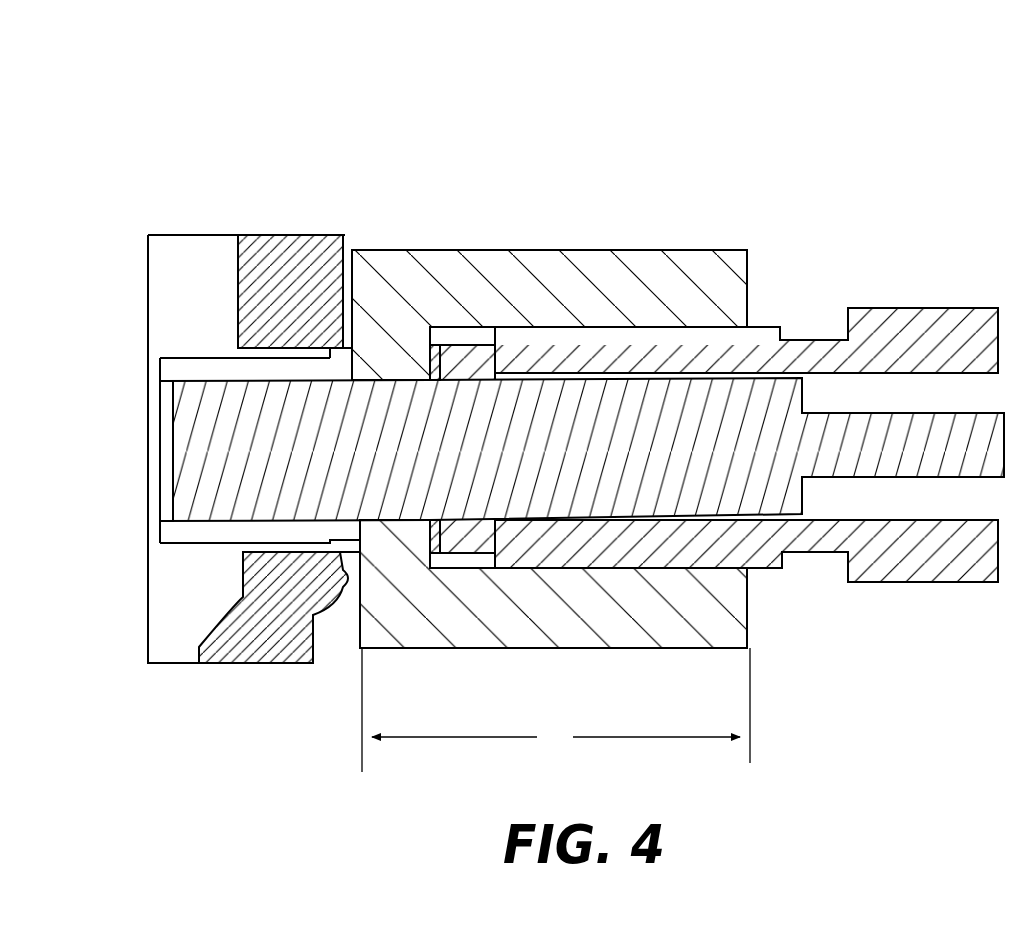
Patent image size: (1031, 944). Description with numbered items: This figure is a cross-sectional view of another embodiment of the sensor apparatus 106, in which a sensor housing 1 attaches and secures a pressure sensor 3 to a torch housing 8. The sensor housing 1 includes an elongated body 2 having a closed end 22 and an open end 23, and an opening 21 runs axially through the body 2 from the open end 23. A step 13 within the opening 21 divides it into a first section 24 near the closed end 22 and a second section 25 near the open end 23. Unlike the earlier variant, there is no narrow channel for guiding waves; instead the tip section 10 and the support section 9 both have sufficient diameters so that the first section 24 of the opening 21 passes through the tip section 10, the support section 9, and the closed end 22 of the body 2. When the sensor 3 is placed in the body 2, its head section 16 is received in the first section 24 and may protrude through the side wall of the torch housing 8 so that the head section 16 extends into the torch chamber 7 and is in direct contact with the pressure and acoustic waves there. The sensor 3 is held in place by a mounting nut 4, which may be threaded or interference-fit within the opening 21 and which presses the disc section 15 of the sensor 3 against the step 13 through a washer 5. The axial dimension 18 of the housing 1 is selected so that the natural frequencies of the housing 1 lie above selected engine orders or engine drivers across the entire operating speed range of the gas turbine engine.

The sensor apparatus 106 is at (738, 94).
The torch chamber 7 is at (224, 419).
The torch housing 8 is at (310, 250).
The support section 9 is at (283, 540).
The tip section 10 is at (166, 366).
The head section 16 is at (202, 421).
The first section 24 is at (201, 545).
The closed end 22 is at (347, 252).
The sensor housing 1 is at (425, 258).
The elongated body 2 is at (573, 447).
The open end 23 is at (747, 254).
The second section 25 is at (604, 568).
The sensor 3 is at (688, 417).
The mounting nut 4 is at (920, 322).
The opening 21 is at (447, 340).
The disc section 15 is at (467, 363).
The step 13 is at (432, 528).
The washer 5 is at (440, 526).
The axial dimension 18 is at (556, 710).